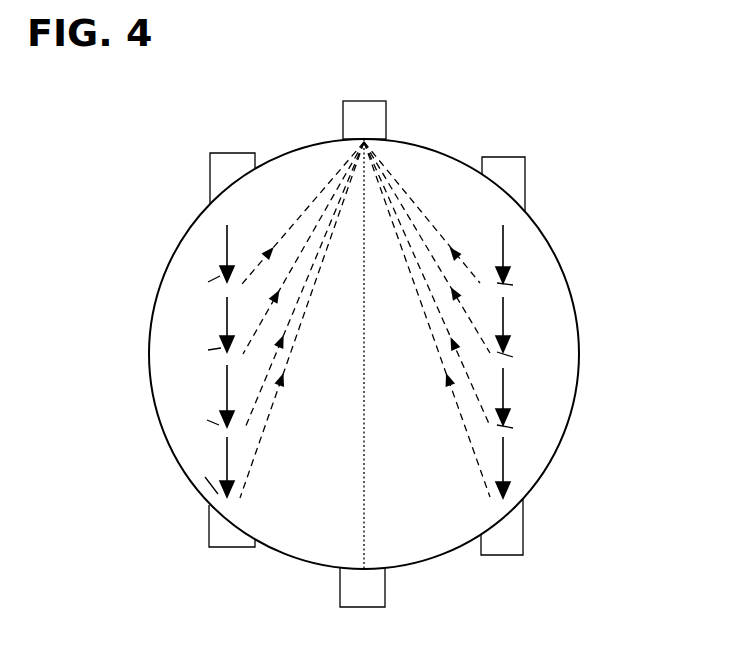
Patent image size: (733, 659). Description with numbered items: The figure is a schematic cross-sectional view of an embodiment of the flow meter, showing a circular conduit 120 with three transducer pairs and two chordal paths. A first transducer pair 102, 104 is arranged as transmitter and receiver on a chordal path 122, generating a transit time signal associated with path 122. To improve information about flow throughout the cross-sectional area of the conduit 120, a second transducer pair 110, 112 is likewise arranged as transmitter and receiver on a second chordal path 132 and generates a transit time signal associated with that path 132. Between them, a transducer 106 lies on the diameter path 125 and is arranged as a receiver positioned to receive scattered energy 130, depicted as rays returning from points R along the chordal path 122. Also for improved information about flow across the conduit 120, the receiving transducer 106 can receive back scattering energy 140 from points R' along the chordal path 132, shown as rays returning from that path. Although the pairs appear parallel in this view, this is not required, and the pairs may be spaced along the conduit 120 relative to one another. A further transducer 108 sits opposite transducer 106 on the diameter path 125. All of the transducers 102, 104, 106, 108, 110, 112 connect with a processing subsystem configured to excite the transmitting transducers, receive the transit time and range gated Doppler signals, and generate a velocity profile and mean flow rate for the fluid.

The transducer 102 is at (205, 170).
The transducer 104 is at (222, 548).
The receiving transducer 106 is at (340, 114).
The transducer 108 is at (352, 585).
The transducer 110 is at (497, 157).
The transducer 112 is at (500, 556).
The conduit 120 is at (157, 424).
The chordal path 122 is at (227, 245).
The diameter path 125 is at (366, 532).
The scattered energy 130 is at (252, 482).
The chordal path 132 is at (503, 248).
The back scattering energy 140 is at (452, 446).